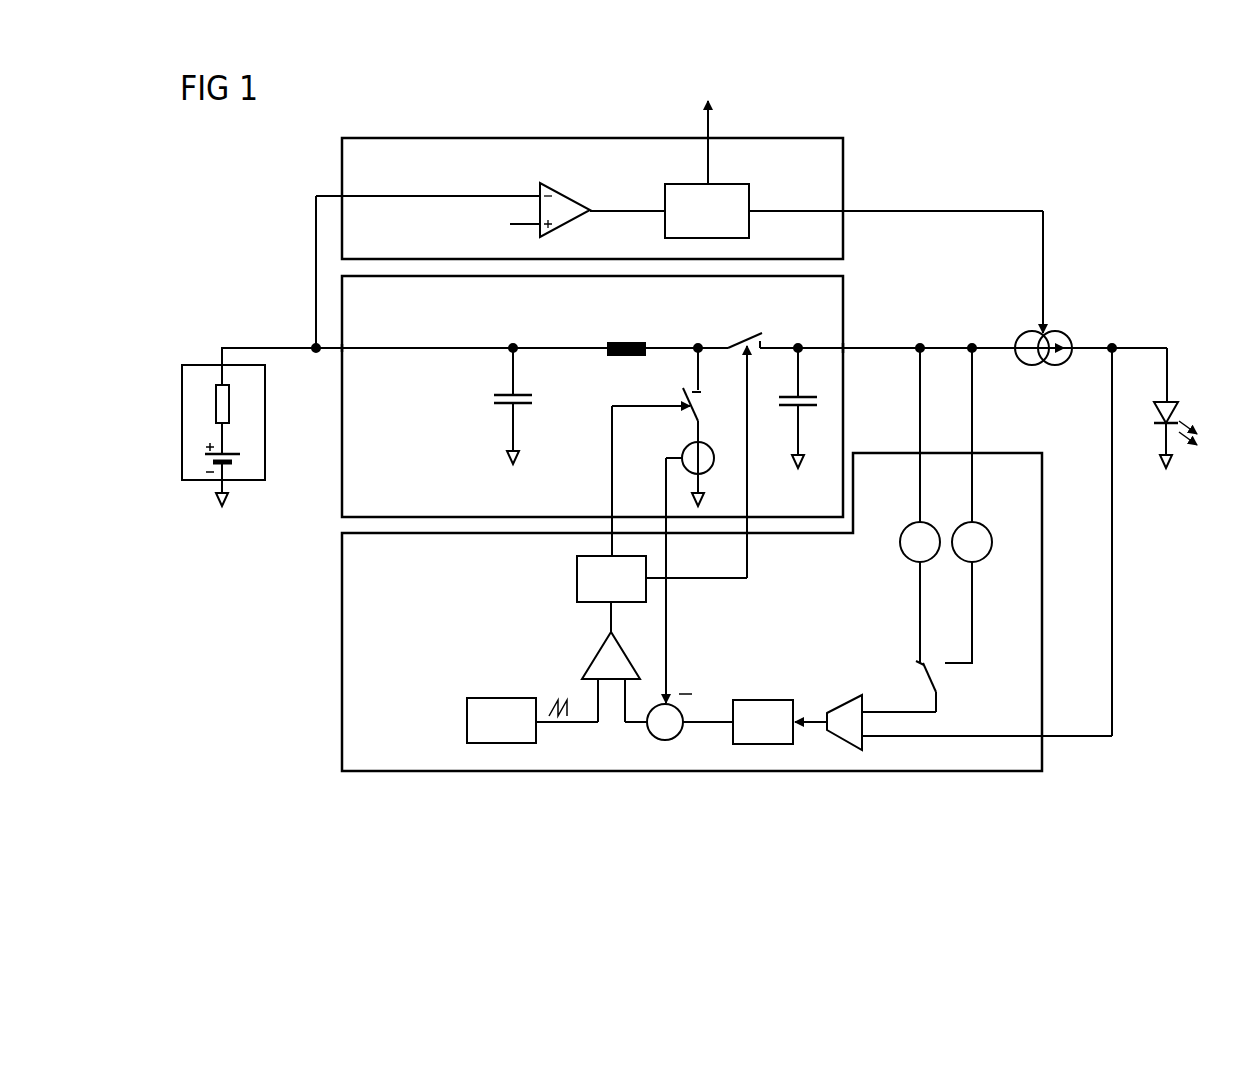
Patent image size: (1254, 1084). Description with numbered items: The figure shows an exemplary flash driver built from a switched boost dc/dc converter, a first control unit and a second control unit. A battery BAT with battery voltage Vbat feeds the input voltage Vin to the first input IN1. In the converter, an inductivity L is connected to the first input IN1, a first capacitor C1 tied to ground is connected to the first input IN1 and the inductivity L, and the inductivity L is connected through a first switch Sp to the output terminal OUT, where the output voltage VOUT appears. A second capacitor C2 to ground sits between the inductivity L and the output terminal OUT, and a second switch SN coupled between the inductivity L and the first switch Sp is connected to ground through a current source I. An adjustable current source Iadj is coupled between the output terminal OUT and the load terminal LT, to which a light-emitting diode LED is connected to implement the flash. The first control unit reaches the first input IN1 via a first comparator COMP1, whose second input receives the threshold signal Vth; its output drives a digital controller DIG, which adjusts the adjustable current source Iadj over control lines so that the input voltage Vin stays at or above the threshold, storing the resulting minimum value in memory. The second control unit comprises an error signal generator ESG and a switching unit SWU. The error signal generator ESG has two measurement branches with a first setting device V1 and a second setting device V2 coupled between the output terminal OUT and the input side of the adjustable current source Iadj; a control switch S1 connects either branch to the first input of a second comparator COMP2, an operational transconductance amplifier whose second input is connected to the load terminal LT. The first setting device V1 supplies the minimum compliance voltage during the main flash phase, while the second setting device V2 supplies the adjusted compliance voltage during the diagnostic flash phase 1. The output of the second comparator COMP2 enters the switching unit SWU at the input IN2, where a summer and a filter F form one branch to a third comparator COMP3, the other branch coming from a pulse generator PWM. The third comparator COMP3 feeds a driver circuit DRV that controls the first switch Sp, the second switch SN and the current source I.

The first comparator COMP1 is at (588, 196).
The threshold signal Vth is at (506, 224).
The digital controller DIG is at (854, 258).
The battery BAT is at (205, 365).
The battery voltage Vbat is at (282, 344).
The first input IN1 is at (340, 350).
The input voltage Vin is at (475, 336).
The first capacitor C1 is at (494, 399).
The inductivity L is at (628, 342).
The first switch Sp is at (740, 342).
The second switch SN is at (694, 404).
The current source I is at (684, 448).
The second capacitor C2 is at (792, 408).
The output voltage VOUT is at (809, 329).
The output terminal OUT is at (846, 348).
The adjustable current source Iadj is at (1056, 331).
The load terminal LT is at (1149, 361).
The light-emitting diode LED is at (1180, 409).
The switching unit SWU is at (530, 608).
The driver circuit DRV is at (662, 489).
The third comparator COMP3 is at (596, 661).
The pulse generator PWM is at (532, 720).
The filter F is at (763, 722).
The second comparator COMP2 is at (843, 700).
The input IN2 is at (795, 728).
The control switch S1 is at (924, 678).
The diagnostic flash phase 1 is at (932, 677).
The error signal generator ESG is at (984, 736).
The first setting device V1 is at (920, 505).
The second setting device V2 is at (968, 505).